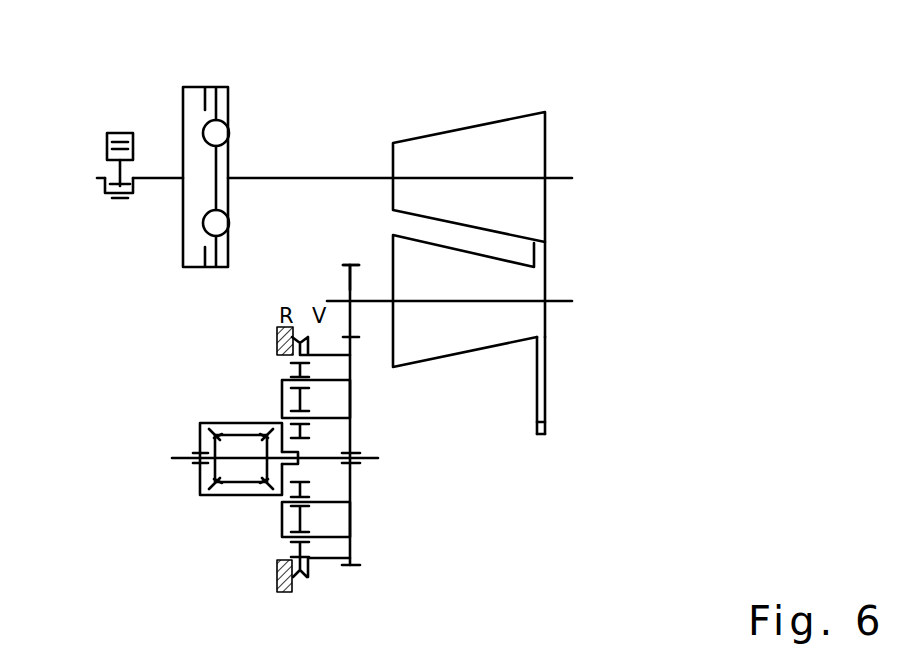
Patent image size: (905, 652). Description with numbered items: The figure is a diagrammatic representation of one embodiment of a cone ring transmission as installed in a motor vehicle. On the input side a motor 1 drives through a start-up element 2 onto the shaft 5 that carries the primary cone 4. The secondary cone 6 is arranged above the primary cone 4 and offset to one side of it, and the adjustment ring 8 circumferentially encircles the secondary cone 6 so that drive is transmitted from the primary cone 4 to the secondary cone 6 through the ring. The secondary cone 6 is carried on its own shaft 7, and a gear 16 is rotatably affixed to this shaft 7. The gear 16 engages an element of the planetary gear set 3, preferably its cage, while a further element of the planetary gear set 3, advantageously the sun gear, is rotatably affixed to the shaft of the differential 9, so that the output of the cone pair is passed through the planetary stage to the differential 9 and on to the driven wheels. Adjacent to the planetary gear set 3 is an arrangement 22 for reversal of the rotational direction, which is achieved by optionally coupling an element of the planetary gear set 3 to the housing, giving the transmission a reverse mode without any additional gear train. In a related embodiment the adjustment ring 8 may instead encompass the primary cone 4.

The motor 1 is at (127, 133).
The start-up element 2 is at (215, 87).
The planetary gear set 3 is at (352, 388).
The primary cone 4 is at (520, 112).
The shaft 5 is at (558, 178).
The secondary cone 6 is at (425, 362).
The shaft 7 is at (565, 302).
The adjustment ring 8 is at (550, 417).
The differential 9 is at (232, 497).
The gear 16 is at (350, 287).
The arrangement for reversal of rotational direction 22 is at (297, 577).